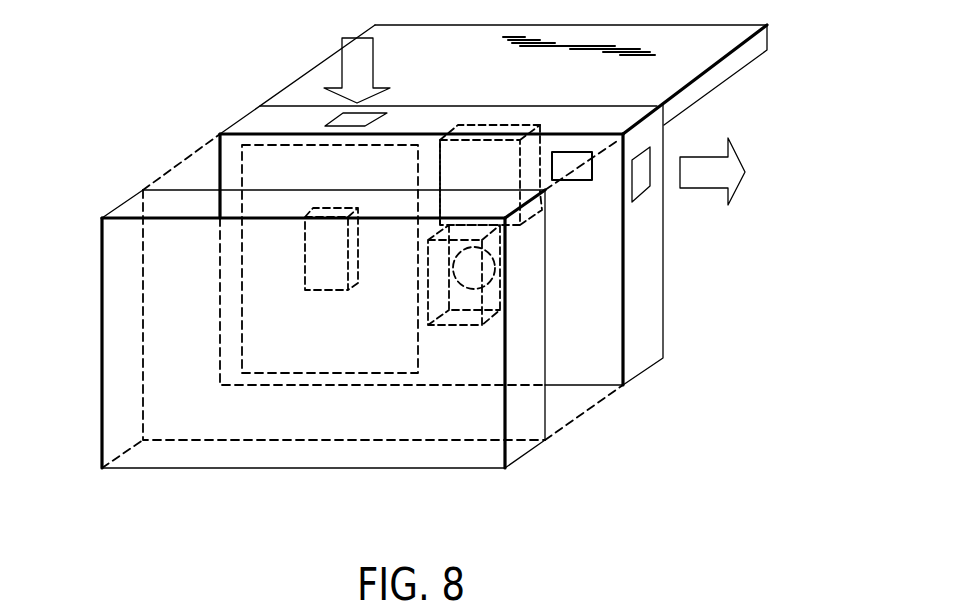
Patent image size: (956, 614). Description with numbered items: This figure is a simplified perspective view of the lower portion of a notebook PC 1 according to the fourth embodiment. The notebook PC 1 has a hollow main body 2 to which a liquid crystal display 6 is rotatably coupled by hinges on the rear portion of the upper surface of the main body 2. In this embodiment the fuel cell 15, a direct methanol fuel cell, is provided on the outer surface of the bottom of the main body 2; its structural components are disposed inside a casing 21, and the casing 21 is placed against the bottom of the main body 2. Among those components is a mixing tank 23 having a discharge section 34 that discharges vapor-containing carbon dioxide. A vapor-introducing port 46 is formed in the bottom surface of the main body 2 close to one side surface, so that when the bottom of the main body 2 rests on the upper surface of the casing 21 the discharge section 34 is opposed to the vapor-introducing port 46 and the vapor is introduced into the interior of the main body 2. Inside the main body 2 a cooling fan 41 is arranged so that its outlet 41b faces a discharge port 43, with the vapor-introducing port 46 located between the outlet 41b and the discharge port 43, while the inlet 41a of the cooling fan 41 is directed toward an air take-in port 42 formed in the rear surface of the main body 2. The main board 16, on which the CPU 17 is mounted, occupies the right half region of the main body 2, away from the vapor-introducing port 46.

The notebook PC 1 is at (728, 98).
The main body 2 is at (658, 336).
The liquid crystal display 6 is at (683, 53).
The fuel cell 15 is at (387, 471).
The main board 16 is at (267, 333).
The CPU 17 is at (330, 280).
The casing 21 is at (533, 408).
The mixing tank 23 is at (462, 318).
The discharge section 34 is at (478, 290).
The cooling fan 41 is at (504, 124).
The inlet 41a is at (441, 153).
The outlet 41b is at (548, 145).
The air take-in port 42 is at (332, 122).
The discharge port 43 is at (640, 187).
The vapor-introducing port 46 is at (580, 178).